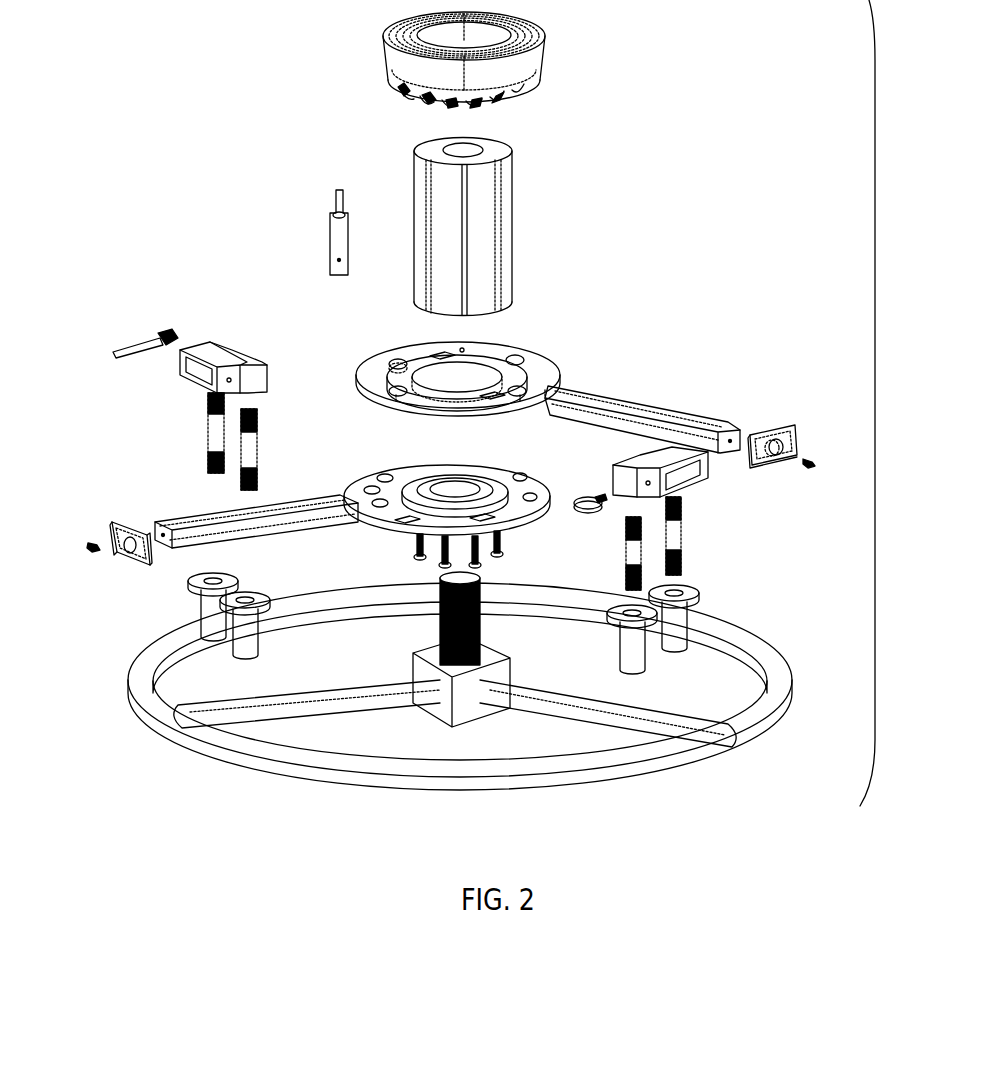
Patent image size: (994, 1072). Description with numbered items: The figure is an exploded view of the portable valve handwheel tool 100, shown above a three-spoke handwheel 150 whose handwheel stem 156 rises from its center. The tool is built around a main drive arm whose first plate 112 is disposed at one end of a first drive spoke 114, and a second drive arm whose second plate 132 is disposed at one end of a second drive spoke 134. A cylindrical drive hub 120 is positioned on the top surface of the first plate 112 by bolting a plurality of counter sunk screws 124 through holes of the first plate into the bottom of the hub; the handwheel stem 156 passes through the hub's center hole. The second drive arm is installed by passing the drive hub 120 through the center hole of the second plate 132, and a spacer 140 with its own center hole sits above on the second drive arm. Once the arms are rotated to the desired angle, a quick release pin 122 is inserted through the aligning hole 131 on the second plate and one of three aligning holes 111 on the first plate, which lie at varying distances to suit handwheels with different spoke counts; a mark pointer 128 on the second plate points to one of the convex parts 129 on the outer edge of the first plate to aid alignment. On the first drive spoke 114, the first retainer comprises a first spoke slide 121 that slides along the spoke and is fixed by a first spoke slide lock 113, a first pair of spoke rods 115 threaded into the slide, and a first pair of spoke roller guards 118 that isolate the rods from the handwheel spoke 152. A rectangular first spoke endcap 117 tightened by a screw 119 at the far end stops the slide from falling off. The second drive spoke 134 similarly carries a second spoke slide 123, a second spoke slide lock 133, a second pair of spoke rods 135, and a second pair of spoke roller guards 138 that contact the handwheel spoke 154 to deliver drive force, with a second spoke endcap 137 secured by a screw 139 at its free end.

The portable valve handwheel tool 100 is at (876, 382).
The spacer 140 is at (548, 60).
The drive hub 120 is at (410, 170).
The quick release pin 122 is at (330, 247).
The mark pointer 128 is at (432, 328).
The aligning hole 131 is at (398, 360).
The second plate 132 is at (517, 350).
The second drive spoke 134 is at (630, 405).
The second spoke endcap 137 is at (783, 422).
The screw 139 is at (808, 466).
The second spoke slide 123 is at (700, 487).
The second pair of spoke rods 135 is at (686, 530).
The second spoke slide lock 133 is at (585, 512).
The first spoke slide lock 113 is at (130, 333).
The first spoke slide 121 is at (185, 382).
The first pair of spoke rods 115 is at (208, 441).
The convex parts 129 is at (424, 469).
The first plate 112 is at (447, 472).
The aligning holes 111 is at (383, 475).
The first drive spoke 114 is at (283, 500).
The counter sunk screws 124 is at (415, 553).
The screw 119 is at (88, 540).
The first spoke endcap 117 is at (128, 562).
The first pair of spoke roller guards 118 is at (200, 608).
The second pair of spoke roller guards 138 is at (690, 607).
The handwheel 150 is at (448, 684).
The handwheel stem 156 is at (478, 618).
The spoke 152 is at (325, 703).
The spoke 154 is at (583, 712).